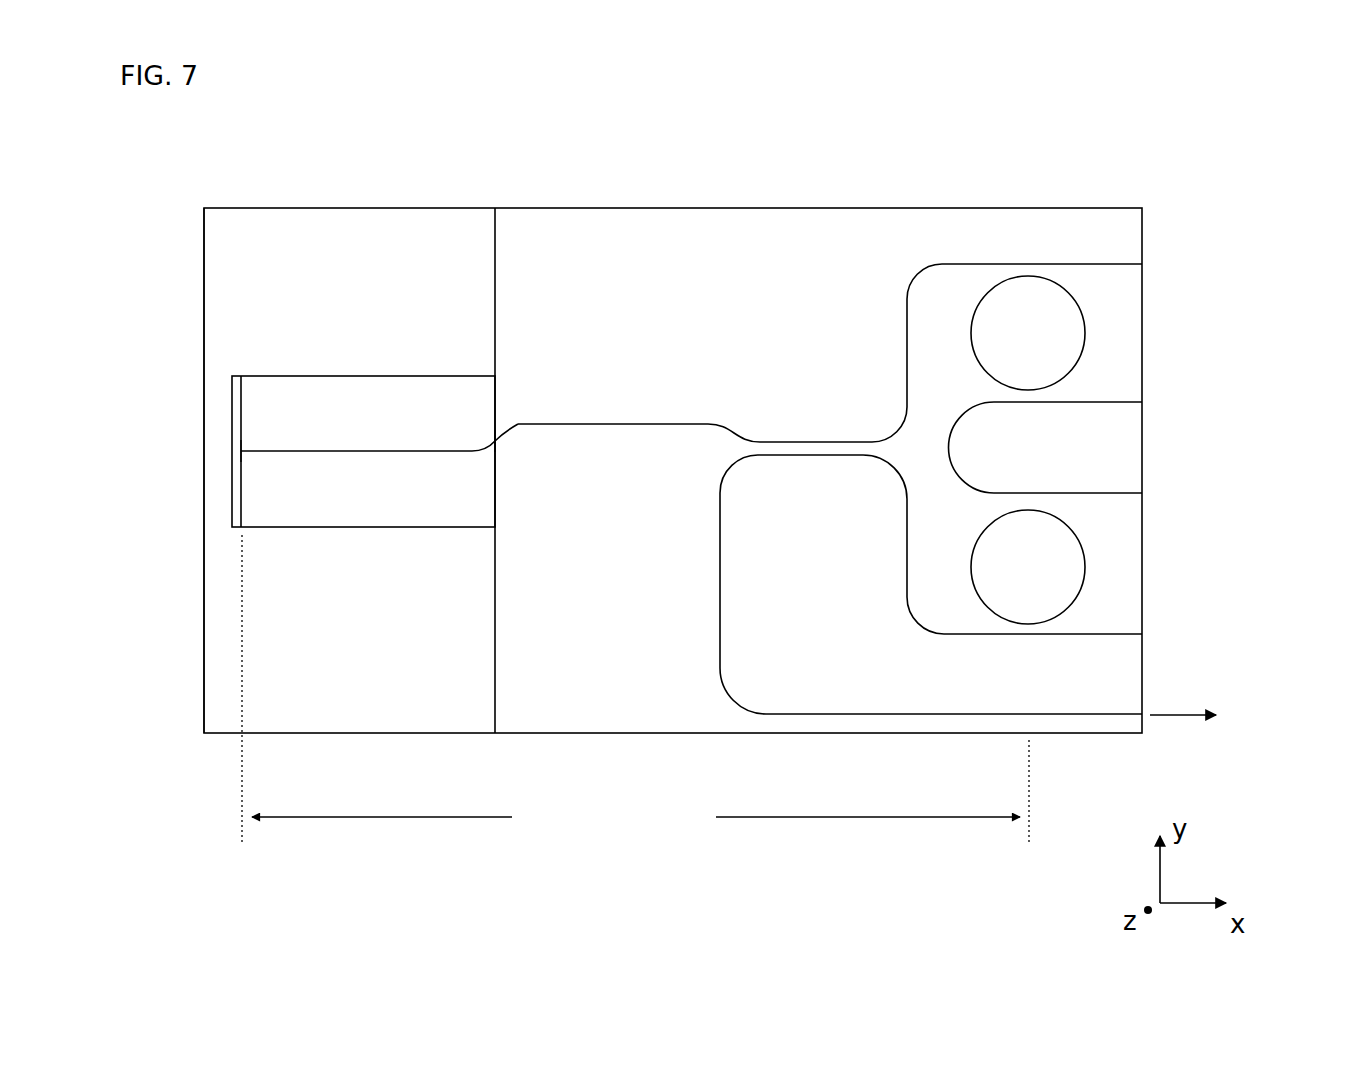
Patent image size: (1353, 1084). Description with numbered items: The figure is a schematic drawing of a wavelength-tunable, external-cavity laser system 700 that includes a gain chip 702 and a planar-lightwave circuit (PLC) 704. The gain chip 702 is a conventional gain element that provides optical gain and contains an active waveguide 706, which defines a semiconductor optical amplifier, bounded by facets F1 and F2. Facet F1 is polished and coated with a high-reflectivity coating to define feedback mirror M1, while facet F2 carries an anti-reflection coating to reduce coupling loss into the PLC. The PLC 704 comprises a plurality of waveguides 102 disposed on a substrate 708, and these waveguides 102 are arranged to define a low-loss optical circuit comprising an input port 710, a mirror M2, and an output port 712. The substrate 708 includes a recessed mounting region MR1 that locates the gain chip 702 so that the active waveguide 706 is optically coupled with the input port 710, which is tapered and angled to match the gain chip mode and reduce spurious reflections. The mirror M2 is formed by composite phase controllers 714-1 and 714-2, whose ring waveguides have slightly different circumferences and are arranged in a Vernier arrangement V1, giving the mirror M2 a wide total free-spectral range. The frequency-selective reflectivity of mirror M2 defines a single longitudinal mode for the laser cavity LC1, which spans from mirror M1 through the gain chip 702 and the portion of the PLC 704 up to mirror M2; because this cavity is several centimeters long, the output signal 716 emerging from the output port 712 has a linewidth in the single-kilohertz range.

The system 700 is at (278, 168).
The gain chip 702 is at (373, 529).
The planar-lightwave circuit (PLC) 704 is at (787, 207).
The active waveguide 706 is at (354, 451).
The substrate 708 is at (673, 470).
The input port 710 is at (504, 446).
The output port 712 is at (1136, 708).
The composite phase controller 714-1 is at (1028, 333).
The composite phase controller 714-2 is at (1028, 567).
The output signal 716 is at (1198, 736).
The waveguides 102 is at (726, 368).
The feedback mirror M1 is at (236, 469).
The mirror M2 is at (866, 326).
The facet F1 is at (252, 445).
The facet F2 is at (485, 438).
The Vernier arrangement V1 is at (1198, 190).
The mounting region MR1 is at (370, 176).
The laser cavity LC1 is at (635, 689).